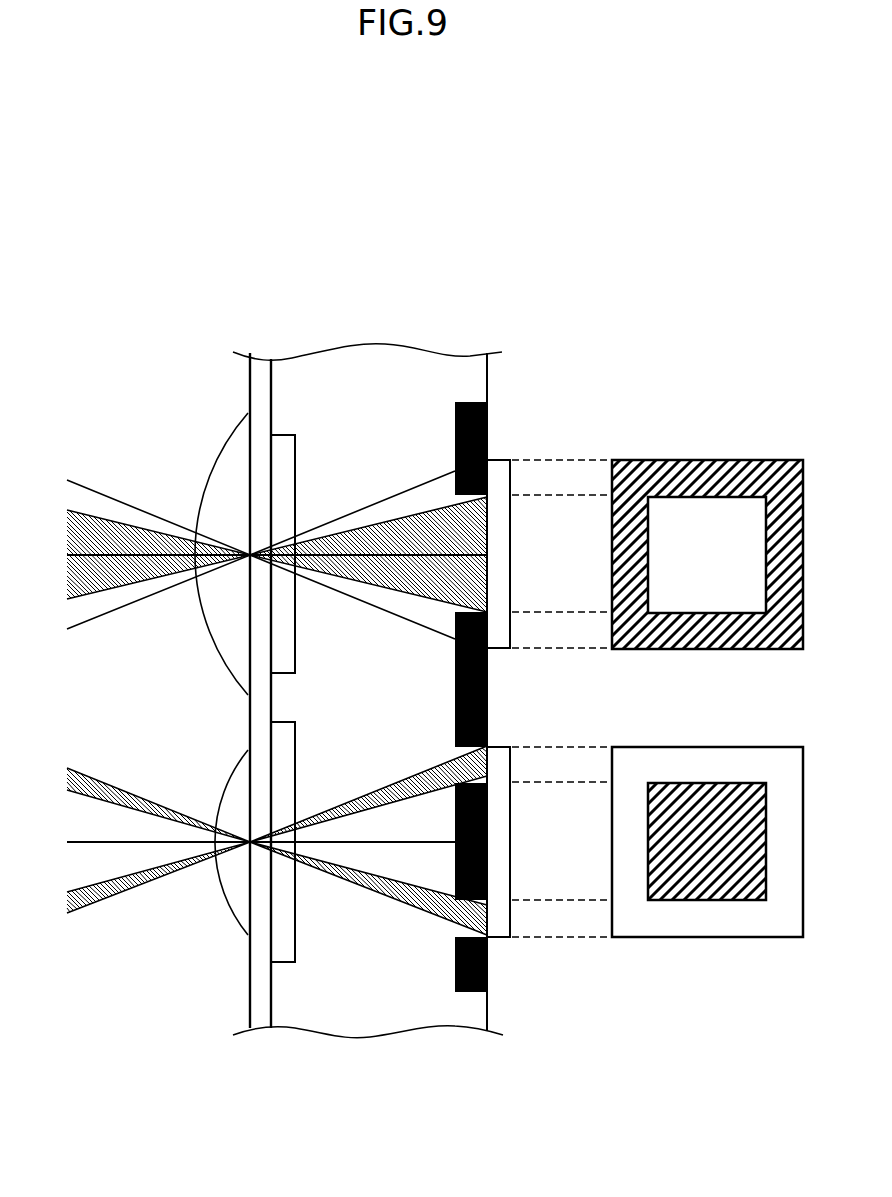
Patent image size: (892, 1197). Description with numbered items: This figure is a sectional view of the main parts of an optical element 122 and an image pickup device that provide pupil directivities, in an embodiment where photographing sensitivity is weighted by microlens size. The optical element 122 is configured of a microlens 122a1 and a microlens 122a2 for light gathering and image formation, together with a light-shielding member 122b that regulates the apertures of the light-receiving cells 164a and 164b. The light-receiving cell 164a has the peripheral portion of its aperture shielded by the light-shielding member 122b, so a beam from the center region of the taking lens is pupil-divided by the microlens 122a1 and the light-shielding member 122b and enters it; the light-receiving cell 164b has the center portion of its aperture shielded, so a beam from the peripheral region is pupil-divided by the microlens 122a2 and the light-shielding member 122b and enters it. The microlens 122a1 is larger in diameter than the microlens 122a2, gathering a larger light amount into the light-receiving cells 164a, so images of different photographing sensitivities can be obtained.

The optical element 122 is at (385, 281).
The microlens 122a1 is at (217, 428).
The microlens 122a2 is at (236, 766).
The light-shielding member 122b is at (473, 402).
The light-receiving cell 164a is at (512, 555).
The light-receiving cell 164b is at (512, 842).